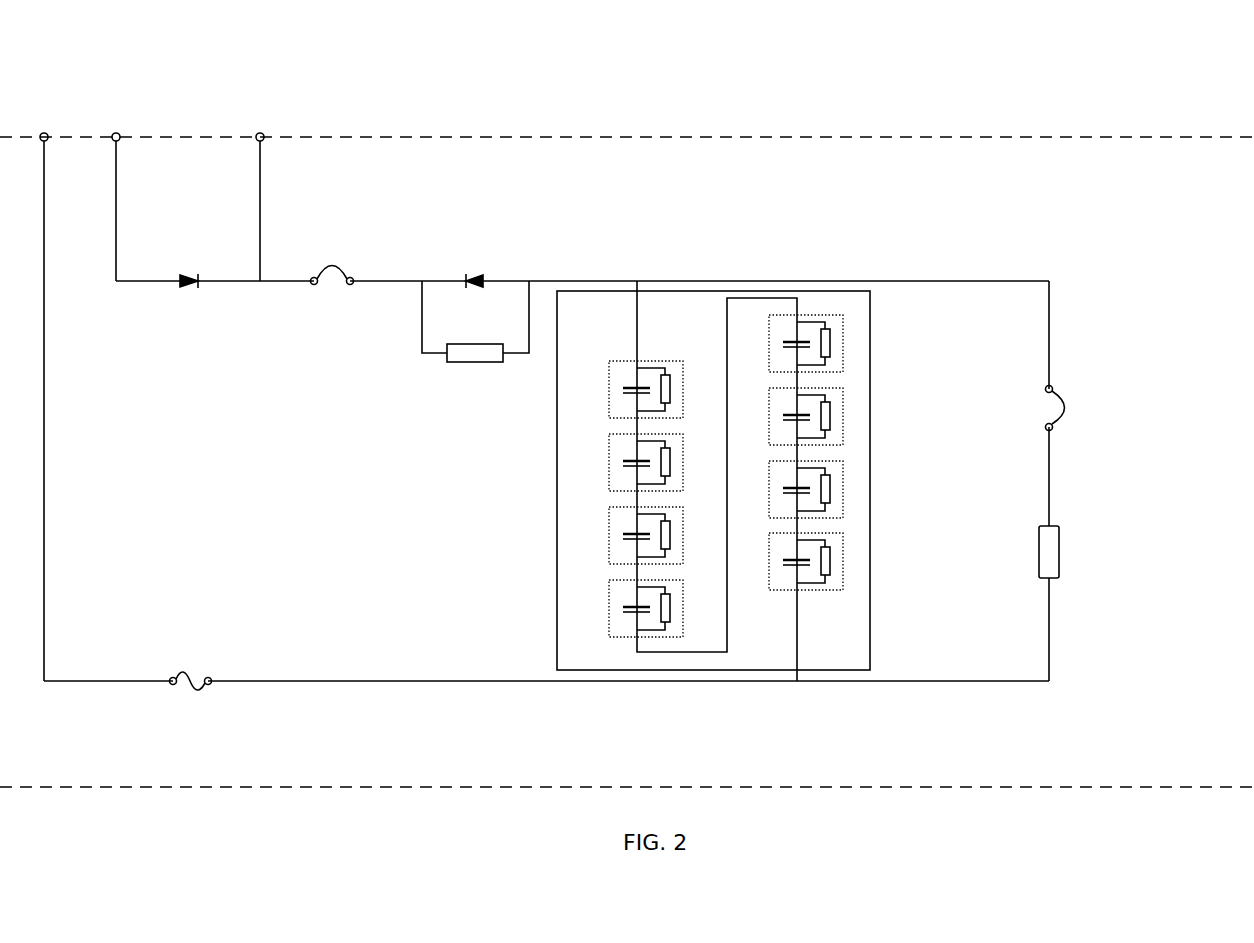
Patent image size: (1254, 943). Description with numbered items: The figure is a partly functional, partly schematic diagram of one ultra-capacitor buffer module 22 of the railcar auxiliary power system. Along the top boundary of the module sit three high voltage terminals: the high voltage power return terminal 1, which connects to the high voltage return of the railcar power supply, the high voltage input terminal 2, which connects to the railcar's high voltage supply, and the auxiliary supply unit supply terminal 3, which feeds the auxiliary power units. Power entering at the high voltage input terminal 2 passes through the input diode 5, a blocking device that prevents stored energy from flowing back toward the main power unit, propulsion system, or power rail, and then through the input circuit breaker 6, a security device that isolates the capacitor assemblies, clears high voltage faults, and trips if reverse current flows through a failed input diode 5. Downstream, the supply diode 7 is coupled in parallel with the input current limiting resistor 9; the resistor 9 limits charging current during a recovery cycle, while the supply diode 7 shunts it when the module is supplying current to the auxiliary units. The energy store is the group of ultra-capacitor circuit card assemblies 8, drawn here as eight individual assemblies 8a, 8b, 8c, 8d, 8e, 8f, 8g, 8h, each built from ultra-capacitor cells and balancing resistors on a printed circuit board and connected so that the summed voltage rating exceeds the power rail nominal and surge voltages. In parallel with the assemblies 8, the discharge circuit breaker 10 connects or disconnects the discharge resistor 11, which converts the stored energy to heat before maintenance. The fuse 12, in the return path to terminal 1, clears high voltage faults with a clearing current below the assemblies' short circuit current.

The high voltage power return terminal 1 is at (48, 126).
The high voltage input terminal 2 is at (116, 126).
The auxiliary supply unit supply terminal 3 is at (258, 126).
The input diode 5 is at (207, 262).
The input circuit breaker 6 is at (312, 262).
The supply diode 7 is at (460, 262).
The ultra-capacitor circuit card assemblies 8 is at (872, 562).
The ultra-capacitor circuit card assembly 8a is at (607, 370).
The ultra-capacitor circuit card assembly 8b is at (607, 443).
The ultra-capacitor circuit card assembly 8c is at (607, 516).
The ultra-capacitor circuit card assembly 8d is at (607, 589).
The ultra-capacitor circuit card assembly 8e is at (767, 324).
The ultra-capacitor circuit card assembly 8f is at (767, 397).
The ultra-capacitor circuit card assembly 8g is at (767, 470).
The ultra-capacitor circuit card assembly 8h is at (767, 542).
The input current limiting resistor 9 is at (476, 368).
The discharge circuit breaker 10 is at (1064, 384).
The discharge resistor 11 is at (1069, 553).
The fuse 12 is at (189, 702).
The ultra-capacitor buffer module 22 is at (645, 123).